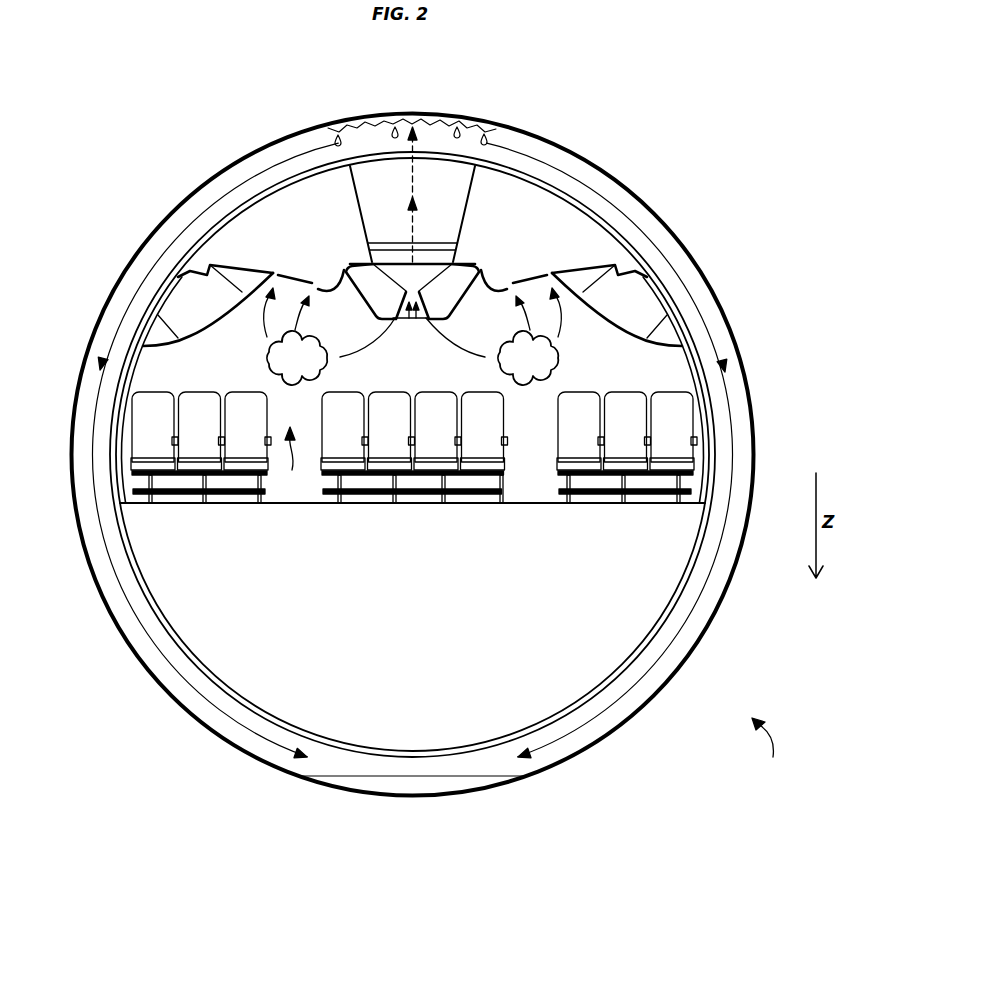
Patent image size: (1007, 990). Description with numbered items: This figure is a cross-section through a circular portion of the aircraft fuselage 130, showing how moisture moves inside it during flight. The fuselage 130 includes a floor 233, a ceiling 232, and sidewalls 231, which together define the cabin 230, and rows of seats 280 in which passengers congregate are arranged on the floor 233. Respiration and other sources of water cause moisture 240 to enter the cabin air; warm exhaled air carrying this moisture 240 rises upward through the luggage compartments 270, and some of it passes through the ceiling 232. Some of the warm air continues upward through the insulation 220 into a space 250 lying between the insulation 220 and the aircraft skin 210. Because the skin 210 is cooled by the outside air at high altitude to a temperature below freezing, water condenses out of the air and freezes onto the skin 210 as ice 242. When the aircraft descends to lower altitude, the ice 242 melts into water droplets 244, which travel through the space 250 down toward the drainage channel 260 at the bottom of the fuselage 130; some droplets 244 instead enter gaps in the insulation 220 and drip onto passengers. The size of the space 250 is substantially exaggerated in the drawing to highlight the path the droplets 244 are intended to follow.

The fuselage 130 is at (770, 750).
The aircraft skin 210 is at (680, 233).
The insulation 220 is at (715, 410).
The cabin 230 is at (294, 457).
The sidewalls 231 is at (150, 357).
The ceiling 232 is at (527, 273).
The floor 233 is at (298, 504).
The moisture 240 is at (267, 353).
The ice 242 is at (418, 122).
The water droplets 244 is at (336, 138).
The space 250 is at (733, 387).
The drainage channel 260 is at (390, 786).
The luggage compartments 270 is at (193, 292).
The seats 280 is at (502, 420).